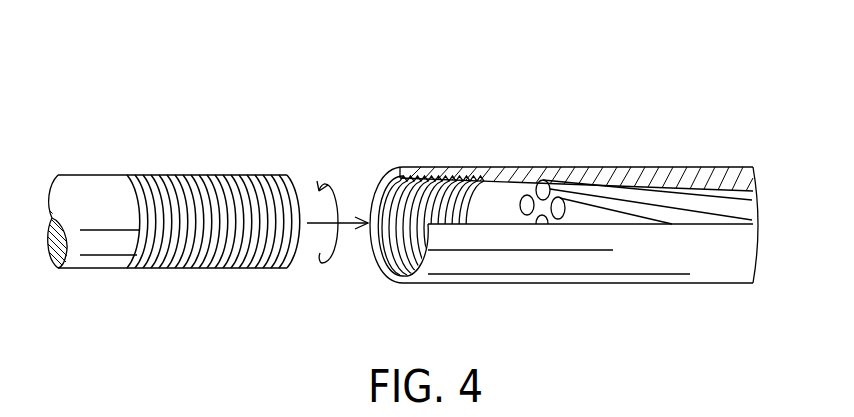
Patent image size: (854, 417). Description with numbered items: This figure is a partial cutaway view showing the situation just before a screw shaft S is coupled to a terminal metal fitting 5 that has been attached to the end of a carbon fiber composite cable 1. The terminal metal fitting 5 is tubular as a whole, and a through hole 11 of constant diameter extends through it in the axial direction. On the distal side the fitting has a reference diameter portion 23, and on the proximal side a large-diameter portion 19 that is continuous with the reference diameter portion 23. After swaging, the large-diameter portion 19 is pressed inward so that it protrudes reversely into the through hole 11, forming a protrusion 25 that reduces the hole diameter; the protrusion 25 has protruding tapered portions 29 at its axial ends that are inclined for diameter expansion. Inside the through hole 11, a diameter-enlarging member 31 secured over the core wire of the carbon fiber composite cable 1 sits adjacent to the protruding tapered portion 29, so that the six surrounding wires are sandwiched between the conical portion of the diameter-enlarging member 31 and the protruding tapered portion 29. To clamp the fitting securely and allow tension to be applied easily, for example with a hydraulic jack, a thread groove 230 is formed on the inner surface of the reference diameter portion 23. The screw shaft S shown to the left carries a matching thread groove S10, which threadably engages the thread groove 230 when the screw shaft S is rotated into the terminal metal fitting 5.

The thread groove S10 is at (203, 175).
The screw shaft S is at (100, 250).
The carbon fiber composite cable 1 is at (740, 208).
The terminal metal fitting 5 is at (680, 143).
The through hole 11 is at (505, 190).
The large-diameter portion 19 is at (698, 165).
The reference diameter portion 23 is at (437, 167).
The thread groove 230 is at (458, 178).
The protrusion 25 is at (740, 193).
The protruding tapered portion 29 is at (627, 192).
The diameter-enlarging member 31 is at (544, 180).